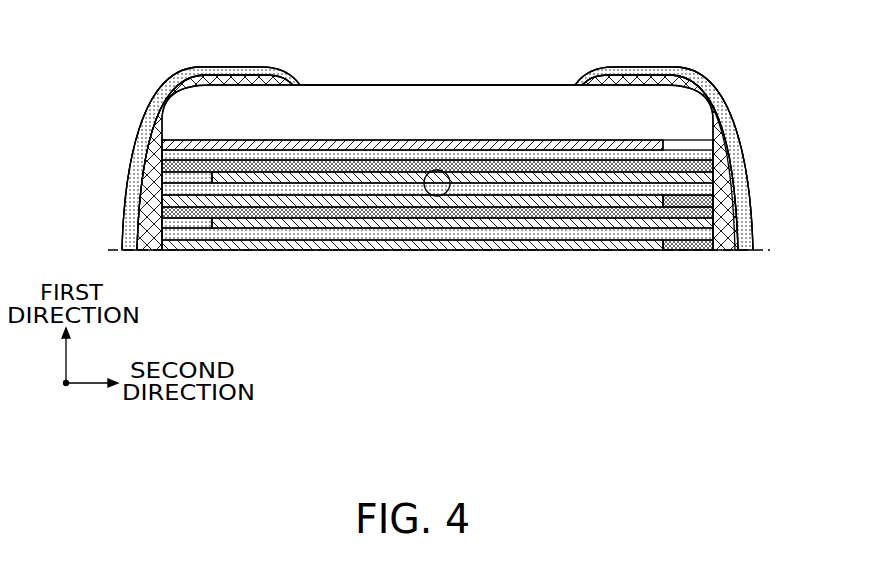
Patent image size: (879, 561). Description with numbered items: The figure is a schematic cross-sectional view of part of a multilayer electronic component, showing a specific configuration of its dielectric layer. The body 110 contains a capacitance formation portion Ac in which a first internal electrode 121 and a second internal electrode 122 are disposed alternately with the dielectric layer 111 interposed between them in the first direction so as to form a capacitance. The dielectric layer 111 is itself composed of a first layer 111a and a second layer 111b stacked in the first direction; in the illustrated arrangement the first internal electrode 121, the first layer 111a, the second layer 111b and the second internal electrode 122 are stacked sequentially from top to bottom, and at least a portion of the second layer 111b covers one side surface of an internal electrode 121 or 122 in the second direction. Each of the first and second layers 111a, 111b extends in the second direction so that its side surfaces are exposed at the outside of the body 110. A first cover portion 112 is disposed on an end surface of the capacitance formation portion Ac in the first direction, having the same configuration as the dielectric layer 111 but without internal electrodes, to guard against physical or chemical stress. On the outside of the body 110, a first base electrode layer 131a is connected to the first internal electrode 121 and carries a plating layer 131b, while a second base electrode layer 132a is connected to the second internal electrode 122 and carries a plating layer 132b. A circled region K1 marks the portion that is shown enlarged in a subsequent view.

The body 110 is at (437, 140).
The dielectric layer 111 is at (437, 252).
The first layer 111a is at (365, 294).
The second layer 111b is at (332, 214).
The first cover portion 112 is at (374, 112).
The first internal electrode 121 is at (292, 147).
The second internal electrode 122 is at (330, 172).
The first base electrode layer 131a is at (137, 212).
The plating layer 131b is at (125, 238).
The second base electrode layer 132a is at (738, 194).
The plating layer 132b is at (752, 222).
The capacitance formation portion Ac is at (437, 182).
The region K1 is at (437, 196).